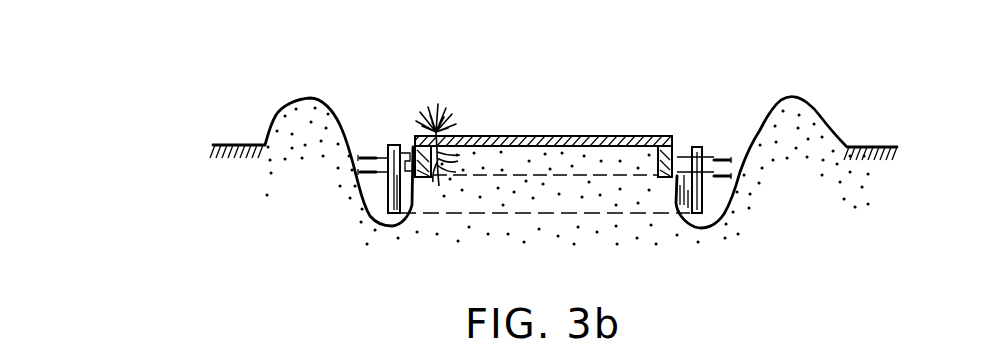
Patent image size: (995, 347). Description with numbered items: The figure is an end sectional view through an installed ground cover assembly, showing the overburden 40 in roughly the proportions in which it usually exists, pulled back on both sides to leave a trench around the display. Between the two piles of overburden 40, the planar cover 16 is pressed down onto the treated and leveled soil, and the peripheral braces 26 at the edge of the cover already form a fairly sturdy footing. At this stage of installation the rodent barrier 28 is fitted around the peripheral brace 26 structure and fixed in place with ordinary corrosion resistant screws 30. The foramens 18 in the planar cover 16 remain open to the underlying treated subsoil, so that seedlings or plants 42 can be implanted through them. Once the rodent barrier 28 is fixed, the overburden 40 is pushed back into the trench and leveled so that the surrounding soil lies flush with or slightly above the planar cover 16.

The planar cover 16 is at (475, 136).
The foramens 18 is at (595, 136).
The peripheral brace 26 is at (412, 142).
The rodent barrier 28 is at (696, 146).
The screws 30 is at (361, 155).
The overburden 40 is at (310, 167).
The plants 42 is at (432, 104).